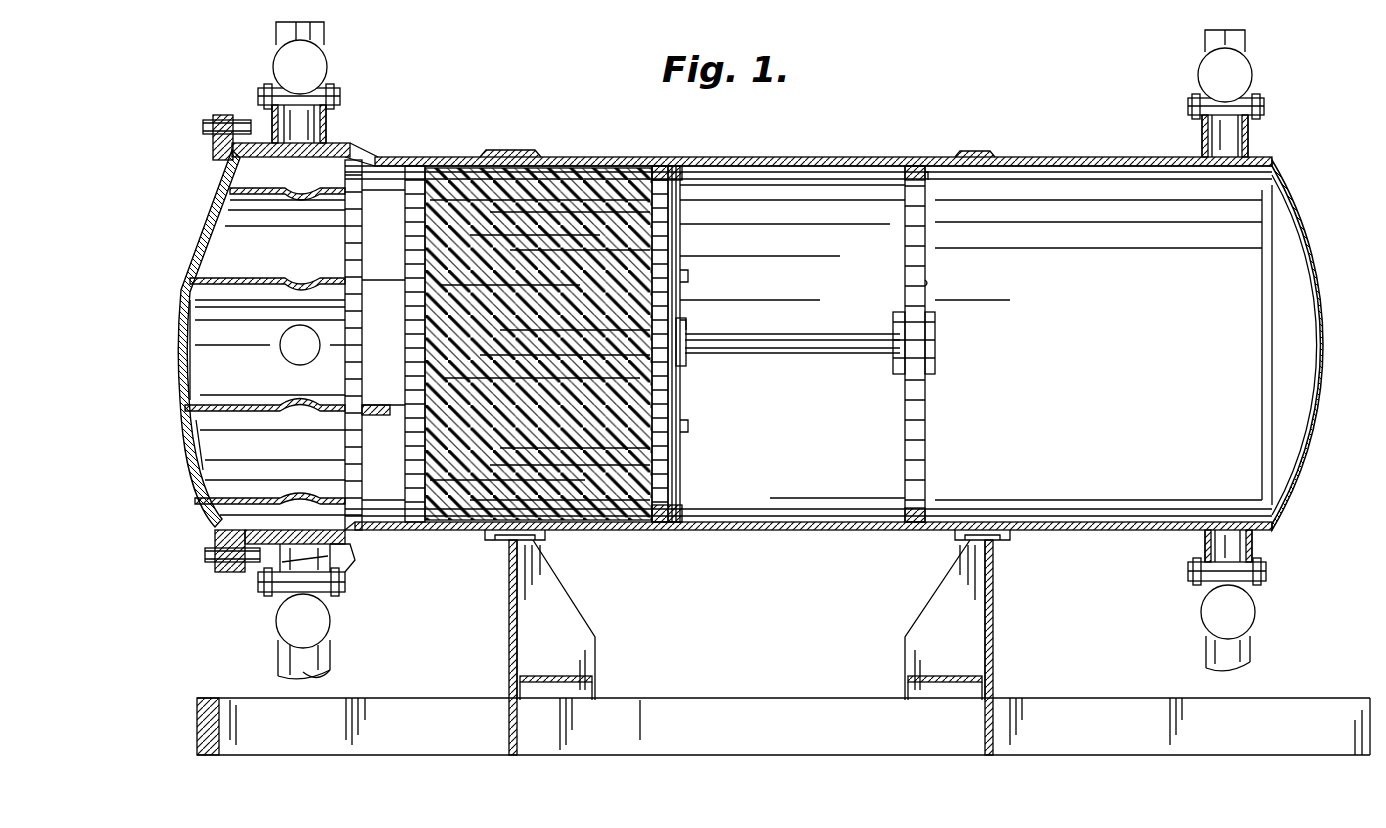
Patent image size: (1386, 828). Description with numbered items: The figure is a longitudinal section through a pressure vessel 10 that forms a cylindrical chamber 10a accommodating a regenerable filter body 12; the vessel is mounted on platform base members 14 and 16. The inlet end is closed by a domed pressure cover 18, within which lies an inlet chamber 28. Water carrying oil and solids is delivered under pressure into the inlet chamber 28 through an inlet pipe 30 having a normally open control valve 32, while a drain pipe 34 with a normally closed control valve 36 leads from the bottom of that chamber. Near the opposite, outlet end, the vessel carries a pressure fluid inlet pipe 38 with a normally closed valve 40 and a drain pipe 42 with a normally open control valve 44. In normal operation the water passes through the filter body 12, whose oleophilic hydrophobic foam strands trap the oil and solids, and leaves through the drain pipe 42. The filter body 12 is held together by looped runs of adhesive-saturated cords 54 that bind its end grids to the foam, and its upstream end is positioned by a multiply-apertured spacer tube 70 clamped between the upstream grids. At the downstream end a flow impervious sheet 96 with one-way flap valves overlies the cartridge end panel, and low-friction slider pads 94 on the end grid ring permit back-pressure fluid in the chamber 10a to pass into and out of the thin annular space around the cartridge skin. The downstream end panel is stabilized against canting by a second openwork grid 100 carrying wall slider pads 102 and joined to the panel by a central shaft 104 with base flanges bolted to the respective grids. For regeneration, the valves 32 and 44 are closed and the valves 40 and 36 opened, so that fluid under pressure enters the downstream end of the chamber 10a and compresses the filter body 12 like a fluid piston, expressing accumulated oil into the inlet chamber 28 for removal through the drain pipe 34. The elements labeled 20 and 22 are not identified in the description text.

The pressure vessel 10 is at (412, 150).
The cylindrical chamber 10a is at (820, 450).
The filter body 12 is at (545, 255).
The platform base member 14 is at (510, 615).
The platform base member 16 is at (992, 615).
The domed pressure cover 18 is at (205, 222).
The partition plate 20 is at (228, 412).
The head flange 22 is at (200, 500).
The inlet chamber 28 is at (269, 345).
The inlet pipe 30 is at (330, 40).
The control valve 32 is at (322, 70).
The drain pipe 34 is at (325, 660).
The control valve 36 is at (325, 628).
The pressure fluid inlet pipe 38 is at (1245, 138).
The valve 40 is at (1248, 62).
The drain pipe 42 is at (1248, 558).
The control valve 44 is at (1252, 611).
The cords 54 is at (530, 215).
The spacer tube 70 is at (375, 410).
The slider pads 94 is at (680, 525).
The flow impervious sheet 96 is at (680, 272).
The openwork disk-like grid 100 is at (925, 425).
The wall slider pads 102 is at (930, 160).
The central shaft 104 is at (800, 350).